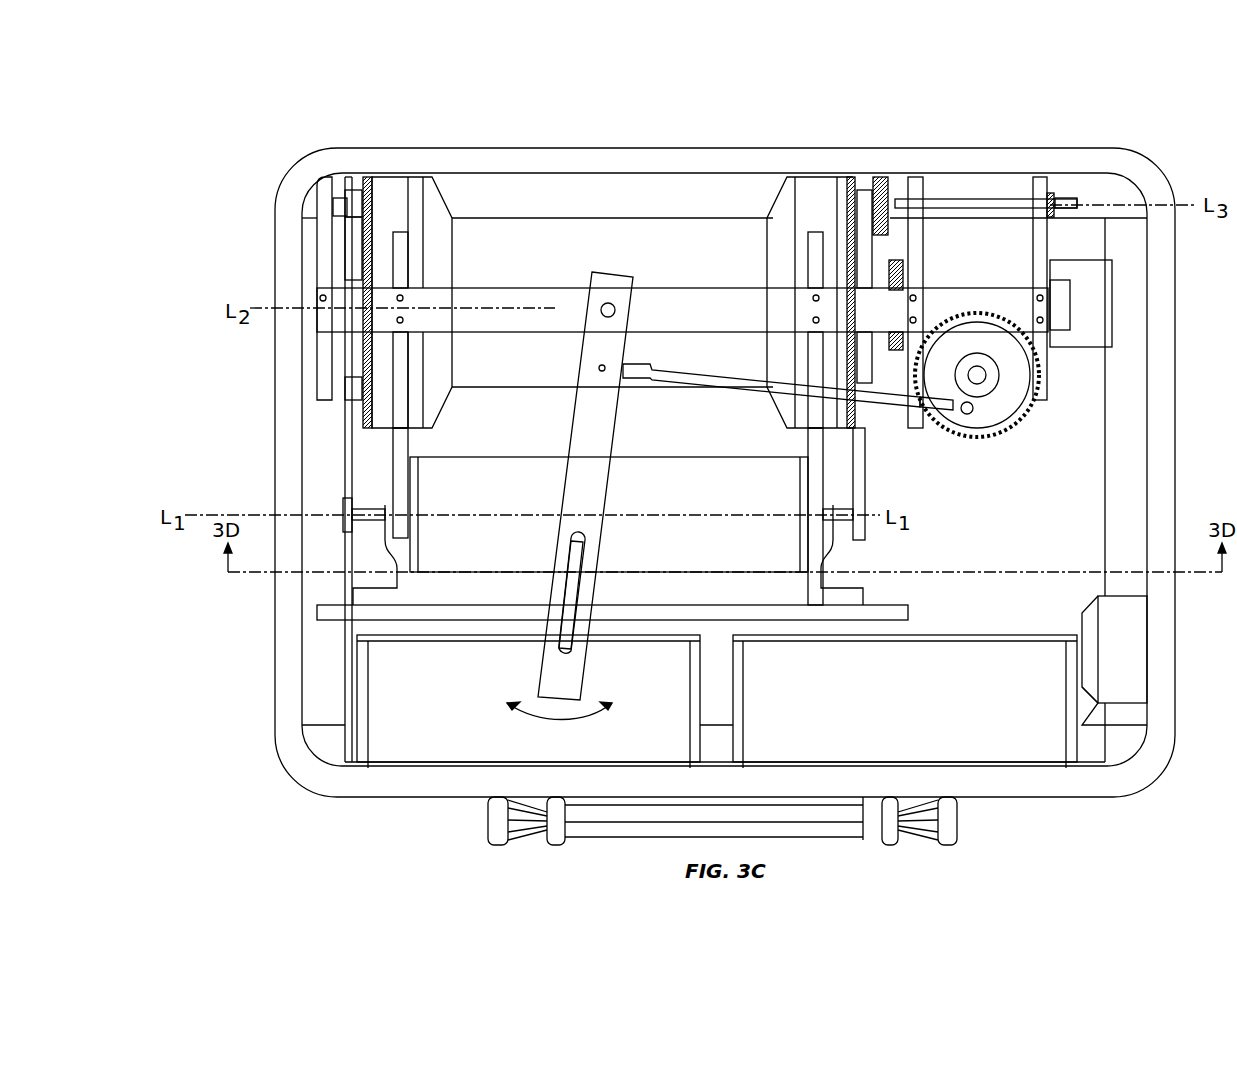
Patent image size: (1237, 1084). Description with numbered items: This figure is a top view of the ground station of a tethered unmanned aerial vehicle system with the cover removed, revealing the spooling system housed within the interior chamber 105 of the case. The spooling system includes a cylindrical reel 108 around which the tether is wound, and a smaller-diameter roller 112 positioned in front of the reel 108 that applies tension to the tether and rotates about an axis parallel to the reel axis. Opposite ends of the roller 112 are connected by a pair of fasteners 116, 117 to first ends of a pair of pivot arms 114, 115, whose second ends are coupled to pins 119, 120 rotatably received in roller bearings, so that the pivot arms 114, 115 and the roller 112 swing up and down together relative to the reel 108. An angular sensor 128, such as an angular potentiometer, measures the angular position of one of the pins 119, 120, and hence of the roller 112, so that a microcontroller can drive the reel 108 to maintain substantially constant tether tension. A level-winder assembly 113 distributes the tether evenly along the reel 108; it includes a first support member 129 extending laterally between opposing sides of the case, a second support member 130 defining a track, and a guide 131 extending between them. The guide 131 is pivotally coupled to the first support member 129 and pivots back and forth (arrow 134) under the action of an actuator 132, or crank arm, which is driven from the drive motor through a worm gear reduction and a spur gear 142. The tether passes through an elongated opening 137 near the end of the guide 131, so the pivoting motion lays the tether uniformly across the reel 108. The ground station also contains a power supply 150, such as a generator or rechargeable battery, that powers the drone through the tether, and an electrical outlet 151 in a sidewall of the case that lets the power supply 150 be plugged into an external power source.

The interior chamber 105 is at (1128, 398).
The reel 108 is at (520, 253).
The roller 112 is at (508, 493).
The level-winder assembly 113 is at (895, 428).
The pivot arm 114 is at (345, 437).
The pivot arm 115 is at (862, 488).
The fastener 116 is at (375, 510).
The fastener 117 is at (843, 520).
The pin 119 is at (340, 195).
The pin 120 is at (977, 205).
The angular sensor 128 is at (1053, 200).
The first support member 129 is at (660, 305).
The second support member 130 is at (317, 612).
The guide 131 is at (588, 432).
The actuator 132 is at (692, 378).
The pivoting motion 134 is at (558, 725).
The opening 137 is at (580, 560).
The spur gear 142 is at (1005, 398).
The power supply 150 is at (985, 695).
The electrical outlet 151 is at (1127, 655).